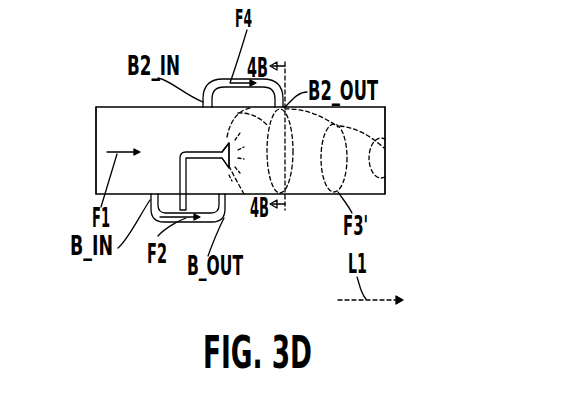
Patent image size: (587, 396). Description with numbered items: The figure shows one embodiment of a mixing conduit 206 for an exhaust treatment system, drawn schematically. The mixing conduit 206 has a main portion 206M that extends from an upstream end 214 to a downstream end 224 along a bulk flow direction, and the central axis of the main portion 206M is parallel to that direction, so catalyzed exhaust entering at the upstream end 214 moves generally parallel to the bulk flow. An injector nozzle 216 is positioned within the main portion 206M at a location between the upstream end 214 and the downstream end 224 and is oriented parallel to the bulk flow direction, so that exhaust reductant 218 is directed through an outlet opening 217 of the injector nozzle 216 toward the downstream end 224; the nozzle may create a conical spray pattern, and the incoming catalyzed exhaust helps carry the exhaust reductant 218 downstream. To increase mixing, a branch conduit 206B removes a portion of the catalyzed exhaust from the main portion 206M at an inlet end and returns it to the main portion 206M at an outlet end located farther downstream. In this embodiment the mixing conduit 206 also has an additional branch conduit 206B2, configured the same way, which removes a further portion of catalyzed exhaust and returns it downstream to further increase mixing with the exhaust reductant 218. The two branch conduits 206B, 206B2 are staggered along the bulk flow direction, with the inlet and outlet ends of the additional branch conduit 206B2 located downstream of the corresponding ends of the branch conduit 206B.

The mixing conduit 206 is at (242, 162).
The main portion 206M is at (100, 107).
The branch conduit 206B is at (192, 230).
The additional branch conduit 206B2 is at (216, 75).
The upstream end 214 is at (95, 143).
The injector nozzle 216 is at (222, 150).
The outlet opening 217 is at (222, 168).
The exhaust reductant 218 is at (224, 142).
The downstream end 224 is at (385, 148).